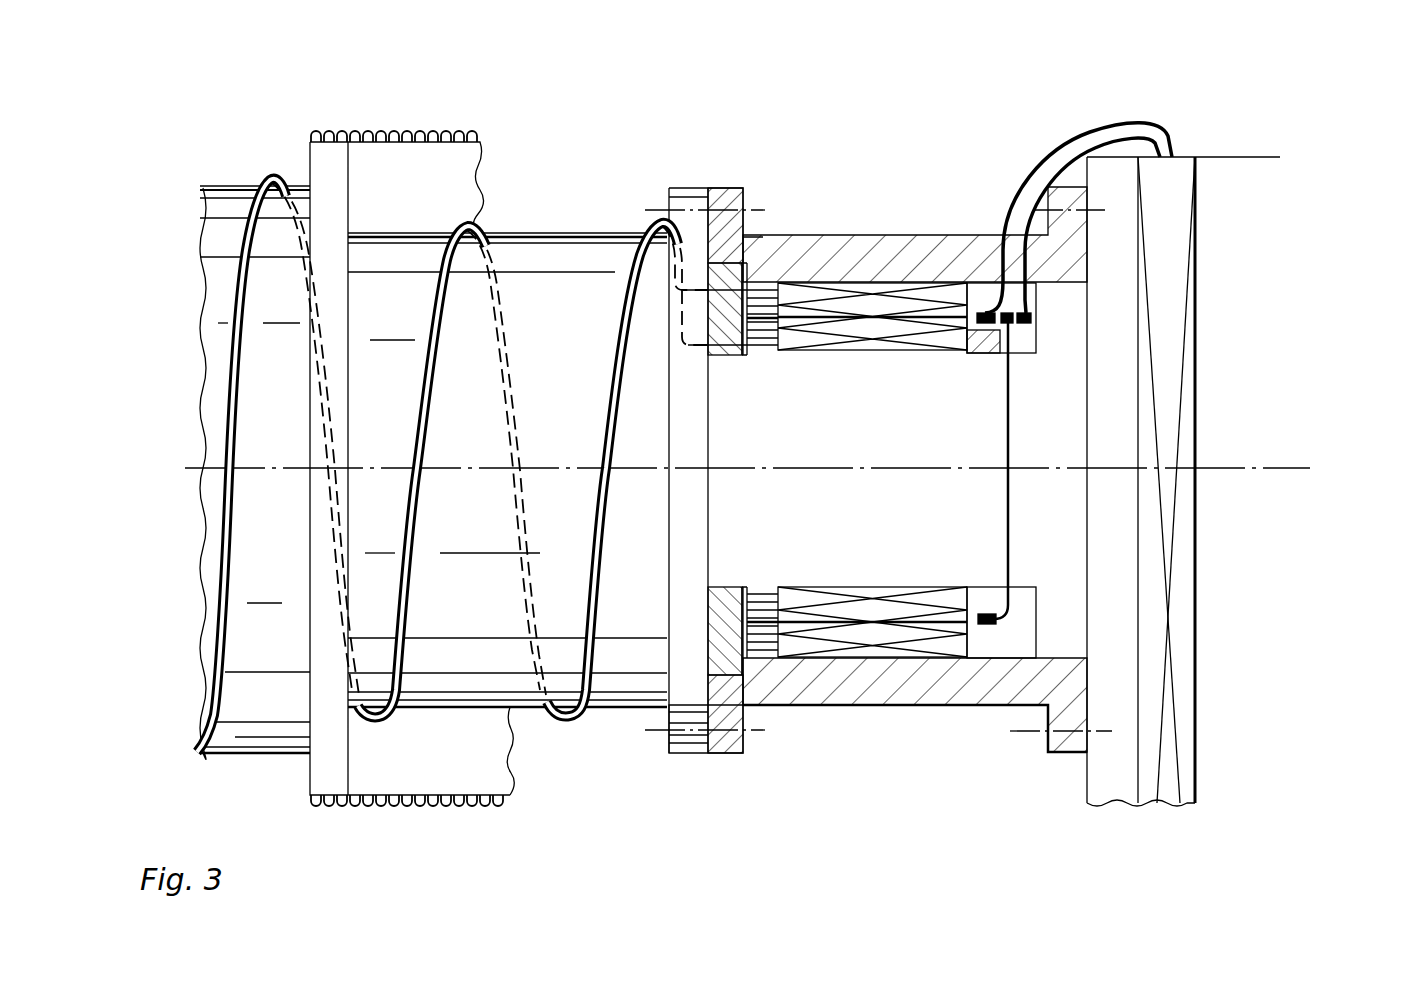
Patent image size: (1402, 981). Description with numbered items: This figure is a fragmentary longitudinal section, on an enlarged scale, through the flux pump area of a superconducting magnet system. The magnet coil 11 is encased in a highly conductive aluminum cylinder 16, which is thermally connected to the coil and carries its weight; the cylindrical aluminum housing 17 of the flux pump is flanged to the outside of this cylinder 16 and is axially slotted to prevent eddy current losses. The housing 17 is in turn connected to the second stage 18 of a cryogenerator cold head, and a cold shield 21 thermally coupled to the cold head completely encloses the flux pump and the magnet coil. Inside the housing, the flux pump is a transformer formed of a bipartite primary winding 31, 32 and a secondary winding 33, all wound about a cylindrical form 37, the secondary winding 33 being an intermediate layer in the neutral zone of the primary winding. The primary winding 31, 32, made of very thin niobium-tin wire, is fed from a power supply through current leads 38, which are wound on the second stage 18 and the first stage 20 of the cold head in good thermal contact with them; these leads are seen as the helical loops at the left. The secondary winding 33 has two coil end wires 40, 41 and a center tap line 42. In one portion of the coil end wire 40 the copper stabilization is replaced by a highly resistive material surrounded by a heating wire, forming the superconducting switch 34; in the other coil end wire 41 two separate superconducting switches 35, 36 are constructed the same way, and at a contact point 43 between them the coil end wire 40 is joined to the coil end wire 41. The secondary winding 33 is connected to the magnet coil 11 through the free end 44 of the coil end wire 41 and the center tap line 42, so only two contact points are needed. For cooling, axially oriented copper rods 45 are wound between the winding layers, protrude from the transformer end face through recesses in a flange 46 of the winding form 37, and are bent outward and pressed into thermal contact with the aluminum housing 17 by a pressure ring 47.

The magnet coil 11 is at (1182, 440).
The aluminum cylinder 16 is at (1112, 383).
The aluminum housing 17 is at (885, 688).
The second stage 18 is at (688, 197).
The first stage 20 is at (326, 160).
The cold shield 21 is at (413, 133).
The primary winding 31 is at (955, 297).
The primary winding 32 is at (913, 342).
The secondary winding 33 is at (938, 320).
The superconducting switch 34 is at (985, 613).
The superconducting switch 35 is at (990, 328).
The superconducting switch 36 is at (1025, 322).
The cylindrical form 37 is at (790, 451).
The current leads 38 is at (633, 265).
The coil end wire 40 is at (1010, 520).
The coil end wire 41 is at (1037, 345).
The center tap line 42 is at (1048, 145).
The contact point 43 is at (1008, 325).
The free end 44 is at (1078, 157).
The copper rods 45 is at (762, 640).
The flange 46 is at (767, 588).
The pressure ring 47 is at (717, 652).